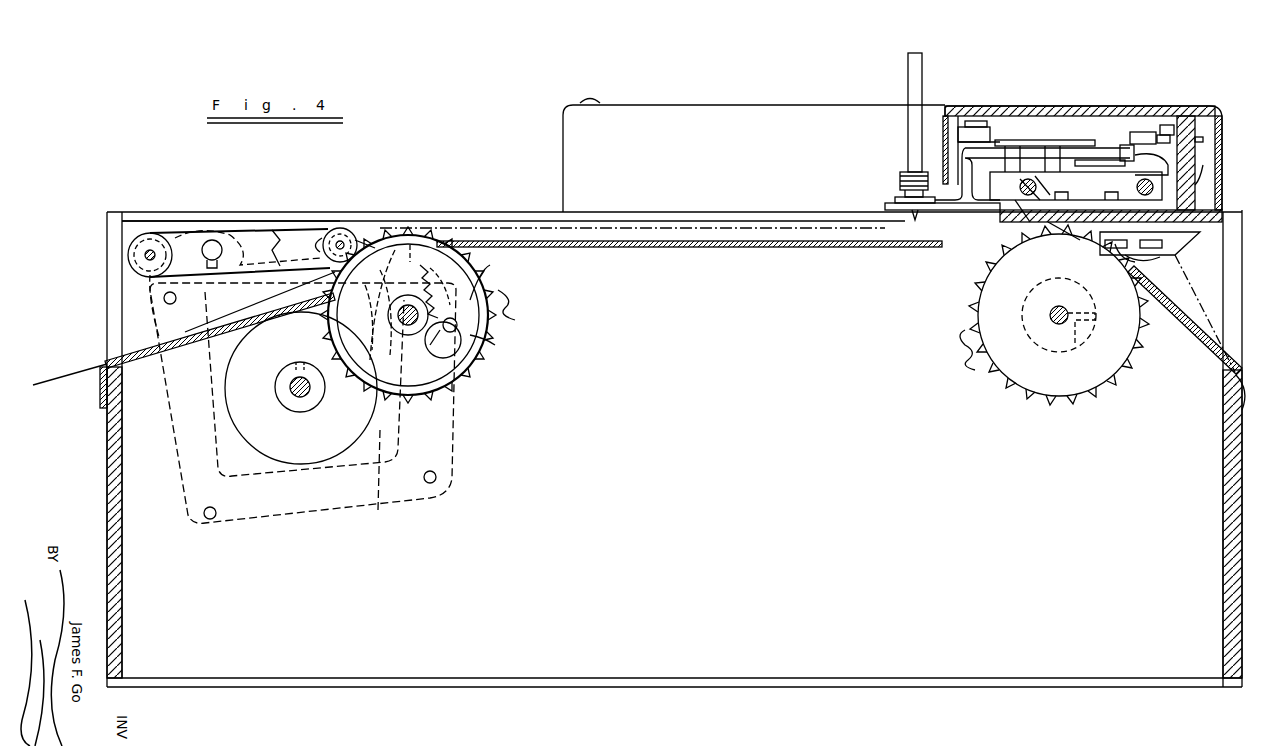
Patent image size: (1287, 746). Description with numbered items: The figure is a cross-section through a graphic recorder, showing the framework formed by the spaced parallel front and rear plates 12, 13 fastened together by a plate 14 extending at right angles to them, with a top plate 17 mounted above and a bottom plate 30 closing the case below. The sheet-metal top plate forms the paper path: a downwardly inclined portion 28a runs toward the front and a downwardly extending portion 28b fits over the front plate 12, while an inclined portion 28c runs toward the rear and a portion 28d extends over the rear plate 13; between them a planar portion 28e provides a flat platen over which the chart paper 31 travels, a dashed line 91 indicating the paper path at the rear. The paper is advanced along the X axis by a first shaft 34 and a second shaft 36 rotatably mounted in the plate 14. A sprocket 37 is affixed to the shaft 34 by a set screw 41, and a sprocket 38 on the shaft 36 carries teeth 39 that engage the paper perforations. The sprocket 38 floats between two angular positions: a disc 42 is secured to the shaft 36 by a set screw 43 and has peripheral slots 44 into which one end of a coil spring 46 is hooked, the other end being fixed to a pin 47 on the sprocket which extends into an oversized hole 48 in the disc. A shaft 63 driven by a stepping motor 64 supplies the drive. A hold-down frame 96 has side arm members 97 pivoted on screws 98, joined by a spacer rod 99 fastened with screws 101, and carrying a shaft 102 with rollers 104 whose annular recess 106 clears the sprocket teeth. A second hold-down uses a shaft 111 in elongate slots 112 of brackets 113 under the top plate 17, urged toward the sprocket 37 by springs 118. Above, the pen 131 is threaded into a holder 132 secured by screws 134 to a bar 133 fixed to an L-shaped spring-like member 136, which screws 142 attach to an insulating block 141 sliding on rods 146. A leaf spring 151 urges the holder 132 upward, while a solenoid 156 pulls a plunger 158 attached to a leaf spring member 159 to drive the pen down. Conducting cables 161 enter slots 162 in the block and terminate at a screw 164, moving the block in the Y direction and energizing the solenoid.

The front plate 12 is at (107, 255).
The rear plate 13 is at (1225, 505).
The plate 14 is at (695, 434).
The top plate 17 is at (500, 212).
The bottom plate 30 is at (722, 688).
The downwardly inclined portion 28a is at (185, 365).
The downwardly extending portion 28b is at (100, 395).
The downwardly inclined portion 28c is at (1200, 340).
The portion 28d is at (1238, 418).
The planar portion 28e is at (712, 250).
The chart paper 31 is at (62, 375).
The first shaft 34 is at (1050, 315).
The second shaft 36 is at (410, 335).
The sprocket 37 is at (1020, 392).
The sprocket 38 is at (495, 345).
The teeth 39 is at (970, 368).
The set screw 41 is at (1075, 345).
The disc 42 is at (470, 300).
The set screw 43 is at (376, 310).
The slot 44 is at (1185, 116).
The coil spring 46 is at (447, 262).
The pin 47 is at (455, 320).
The hole 48 is at (462, 355).
The shaft 63 is at (303, 398).
The stepping motor 64 is at (378, 510).
The guide 91 is at (1180, 298).
The hold-down frame 96 is at (135, 225).
The side arm member 97 is at (185, 238).
The screw 98 is at (152, 250).
The spacer rod 99 is at (245, 236).
The screw 101 is at (210, 268).
The shaft 102 is at (340, 240).
The roller 104 is at (322, 238).
The annular recess 106 is at (375, 248).
The shaft 111 is at (1150, 242).
The elongate slot 112 is at (1170, 258).
The bracket 113 is at (1160, 268).
The spring 118 is at (1090, 210).
The pen 131 is at (905, 135).
The holder 132 is at (885, 203).
The bar 133 is at (1127, 145).
The screw 134 is at (1150, 155).
The L-shaped spring-like member 136 is at (1170, 125).
The block 141 is at (1080, 172).
The screw 142 is at (1140, 132).
The rod 146 is at (975, 258).
The leaf spring 151 is at (1048, 140).
The solenoid 156 is at (962, 152).
The plunger 158 is at (975, 121).
The leaf spring member 159 is at (962, 127).
The cable 161 is at (1075, 240).
The slot 162 is at (1032, 224).
The screw 164 is at (1095, 160).